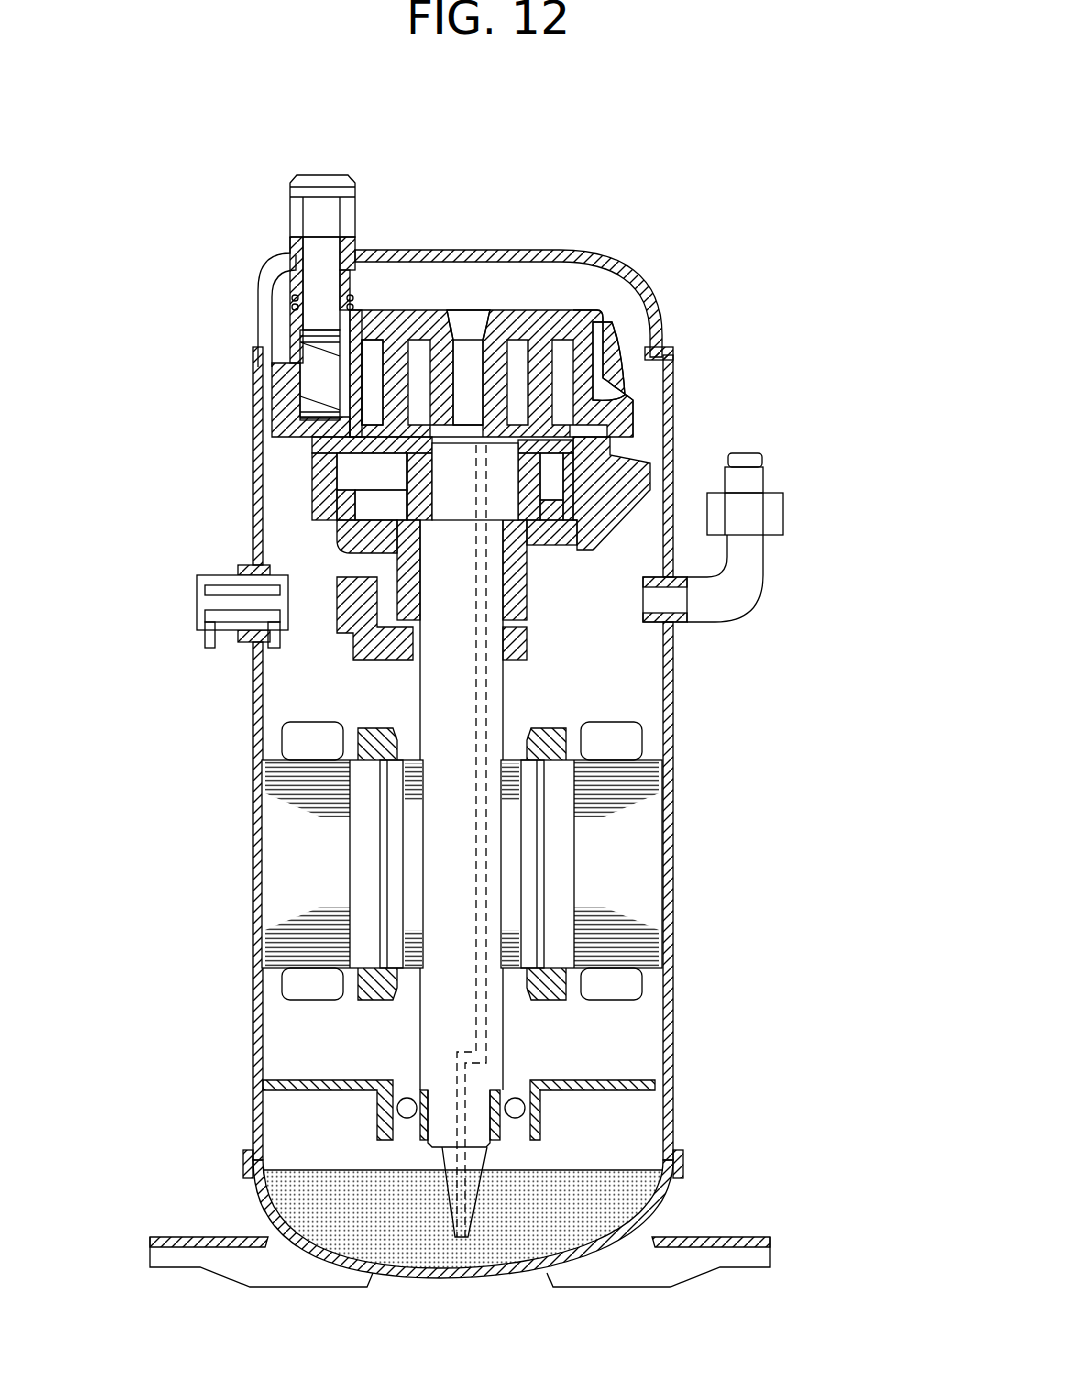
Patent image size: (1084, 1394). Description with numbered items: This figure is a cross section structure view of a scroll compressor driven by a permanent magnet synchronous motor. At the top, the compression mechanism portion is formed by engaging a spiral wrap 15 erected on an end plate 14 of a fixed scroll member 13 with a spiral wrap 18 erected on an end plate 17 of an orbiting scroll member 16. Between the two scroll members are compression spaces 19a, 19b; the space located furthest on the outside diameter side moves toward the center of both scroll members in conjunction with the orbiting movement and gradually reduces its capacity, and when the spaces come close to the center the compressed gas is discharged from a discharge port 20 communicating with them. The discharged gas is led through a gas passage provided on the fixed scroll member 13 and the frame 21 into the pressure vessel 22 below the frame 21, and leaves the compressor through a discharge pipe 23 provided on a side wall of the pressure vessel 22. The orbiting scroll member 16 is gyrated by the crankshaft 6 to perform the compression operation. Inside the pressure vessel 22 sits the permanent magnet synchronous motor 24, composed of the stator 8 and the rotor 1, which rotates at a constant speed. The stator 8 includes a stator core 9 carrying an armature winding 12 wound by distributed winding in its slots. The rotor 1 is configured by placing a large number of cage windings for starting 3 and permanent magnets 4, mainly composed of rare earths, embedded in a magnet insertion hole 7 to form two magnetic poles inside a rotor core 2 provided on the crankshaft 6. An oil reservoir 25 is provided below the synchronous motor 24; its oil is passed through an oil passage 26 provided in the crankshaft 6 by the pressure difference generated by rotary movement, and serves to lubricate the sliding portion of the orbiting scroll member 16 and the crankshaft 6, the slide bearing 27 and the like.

The rotor 1 is at (632, 923).
The rotor core 2 is at (513, 828).
The cage windings for starting 3 is at (355, 978).
The permanent magnets 4 is at (528, 864).
The crankshaft 6 is at (453, 620).
The magnet insertion hole 7 is at (375, 878).
The stator 8 is at (273, 760).
The stator core 9 is at (290, 827).
The armature winding 12 is at (312, 998).
The fixed scroll member 13 is at (617, 266).
The end plate 14 is at (535, 307).
The spiral wrap 15 is at (403, 367).
The orbiting scroll member 16 is at (312, 470).
The end plate 17 is at (312, 455).
The spiral wrap 18 is at (580, 395).
The compression space 19a is at (600, 362).
The compression space 19b is at (376, 369).
The discharge port 20 is at (467, 317).
The frame 21 is at (338, 537).
The pressure vessel 22 is at (667, 692).
The discharge pipe 23 is at (747, 553).
The permanent magnet synchronous motor 24 is at (650, 758).
The oil reservoir 25 is at (597, 1170).
The oil passage 26 is at (480, 1033).
The slide bearing 27 is at (508, 575).